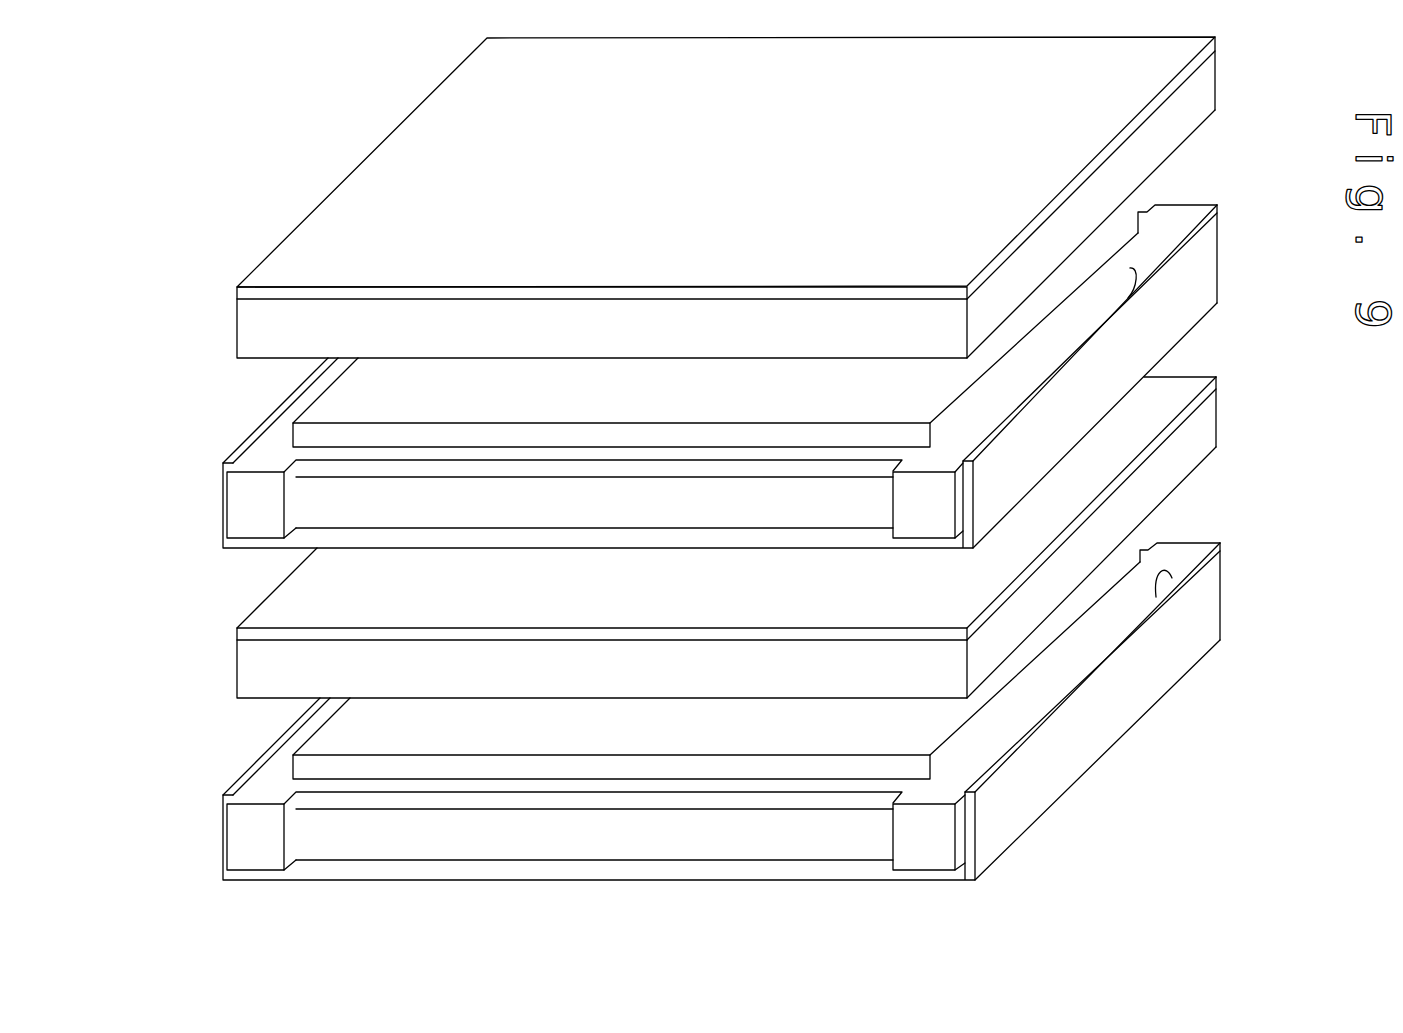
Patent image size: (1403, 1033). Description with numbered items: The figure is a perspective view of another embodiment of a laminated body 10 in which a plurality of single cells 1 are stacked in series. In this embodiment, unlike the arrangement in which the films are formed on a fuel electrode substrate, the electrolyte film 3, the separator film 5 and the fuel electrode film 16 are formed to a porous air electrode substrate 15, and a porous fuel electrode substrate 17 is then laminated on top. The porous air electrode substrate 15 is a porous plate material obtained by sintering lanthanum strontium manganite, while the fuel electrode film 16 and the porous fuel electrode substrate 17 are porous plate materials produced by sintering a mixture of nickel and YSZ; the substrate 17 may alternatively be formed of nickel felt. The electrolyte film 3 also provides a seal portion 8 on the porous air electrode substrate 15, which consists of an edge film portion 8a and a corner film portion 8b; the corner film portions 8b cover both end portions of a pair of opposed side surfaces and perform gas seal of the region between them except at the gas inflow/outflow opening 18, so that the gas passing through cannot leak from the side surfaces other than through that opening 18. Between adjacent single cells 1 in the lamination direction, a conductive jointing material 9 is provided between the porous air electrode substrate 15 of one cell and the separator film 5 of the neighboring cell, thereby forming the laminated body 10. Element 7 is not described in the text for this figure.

The single cell 1 is at (1236, 40).
The electrolyte film 3 is at (541, 693).
The separator film 5 is at (688, 514).
The seal strip 7 is at (510, 693).
The seal portion 8 is at (920, 522).
The edge film portion 8a is at (250, 432).
The corner film portion 8b is at (1178, 205).
The conductive jointing material 9 is at (1170, 58).
The laminated body 10 is at (688, 367).
The porous air electrode substrate 15 is at (318, 508).
The fuel electrode film 16 is at (340, 400).
The porous fuel electrode substrate 17 is at (248, 325).
The gas inflow/outflow opening 18 is at (525, 509).